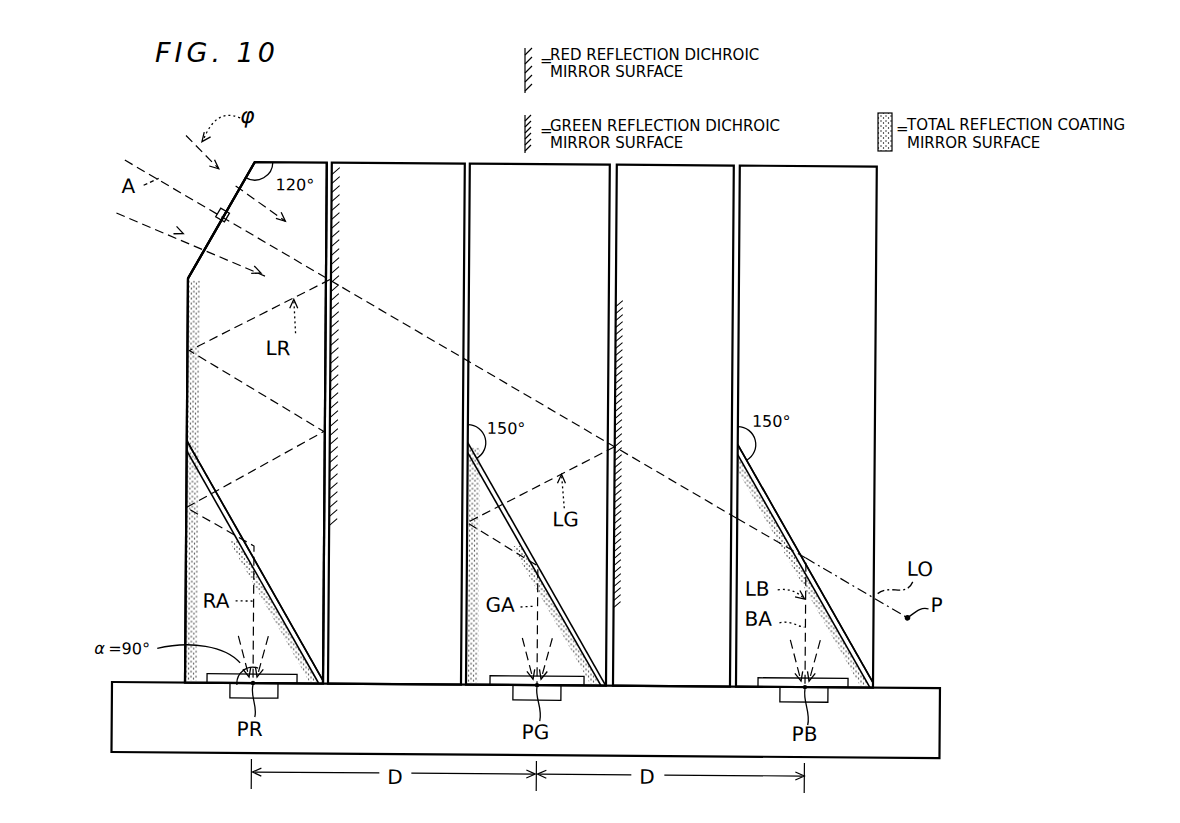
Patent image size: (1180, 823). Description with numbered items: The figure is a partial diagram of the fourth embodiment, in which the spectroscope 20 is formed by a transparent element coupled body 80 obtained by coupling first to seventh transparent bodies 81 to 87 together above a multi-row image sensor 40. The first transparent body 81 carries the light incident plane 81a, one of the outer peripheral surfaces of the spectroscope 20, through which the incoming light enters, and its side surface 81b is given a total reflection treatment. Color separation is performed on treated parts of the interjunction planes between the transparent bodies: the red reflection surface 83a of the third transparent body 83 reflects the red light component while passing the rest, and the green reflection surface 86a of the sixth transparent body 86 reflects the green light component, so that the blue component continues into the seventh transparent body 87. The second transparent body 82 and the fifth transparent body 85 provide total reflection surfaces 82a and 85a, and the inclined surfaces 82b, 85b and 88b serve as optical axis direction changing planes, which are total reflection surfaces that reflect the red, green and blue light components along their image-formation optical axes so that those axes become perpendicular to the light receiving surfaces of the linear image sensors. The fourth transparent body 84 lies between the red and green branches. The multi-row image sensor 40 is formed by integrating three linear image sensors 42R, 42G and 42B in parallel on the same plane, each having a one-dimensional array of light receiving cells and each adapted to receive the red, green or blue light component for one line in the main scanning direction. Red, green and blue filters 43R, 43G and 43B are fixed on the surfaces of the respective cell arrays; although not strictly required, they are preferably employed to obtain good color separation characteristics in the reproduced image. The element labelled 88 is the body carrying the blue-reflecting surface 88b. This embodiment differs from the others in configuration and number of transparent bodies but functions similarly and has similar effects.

The spectroscope 20 is at (178, 440).
The transparent element coupled body 80 is at (325, 423).
The multi-row image sensor 40 is at (108, 707).
The first transparent body 81 is at (294, 499).
The light incident plane 81a is at (199, 252).
The total reflection surface 81b is at (185, 367).
The second transparent body 82 is at (203, 552).
The total reflection surface 82a is at (185, 599).
The optical axis direction changing plane 82b is at (263, 582).
The third transparent body 83 is at (410, 408).
The red reflection surface 83a is at (327, 374).
The fourth transparent body 84 is at (560, 293).
The fifth transparent body 85 is at (480, 566).
The total reflection surface 85a is at (466, 626).
The optical axis direction changing plane 85b is at (555, 588).
The sixth transparent body 86 is at (687, 294).
The green reflection surface 86a is at (613, 350).
The seventh transparent body 87 is at (807, 293).
The blue reflecting mirror member 88 is at (748, 552).
The optical axis direction changing plane 88b is at (790, 526).
The red filter 43R is at (218, 676).
The linear image sensor 42R is at (275, 690).
The green filter 43G is at (503, 676).
The linear image sensor 42G is at (560, 690).
The blue filter 43B is at (775, 677).
The linear image sensor 42B is at (830, 690).